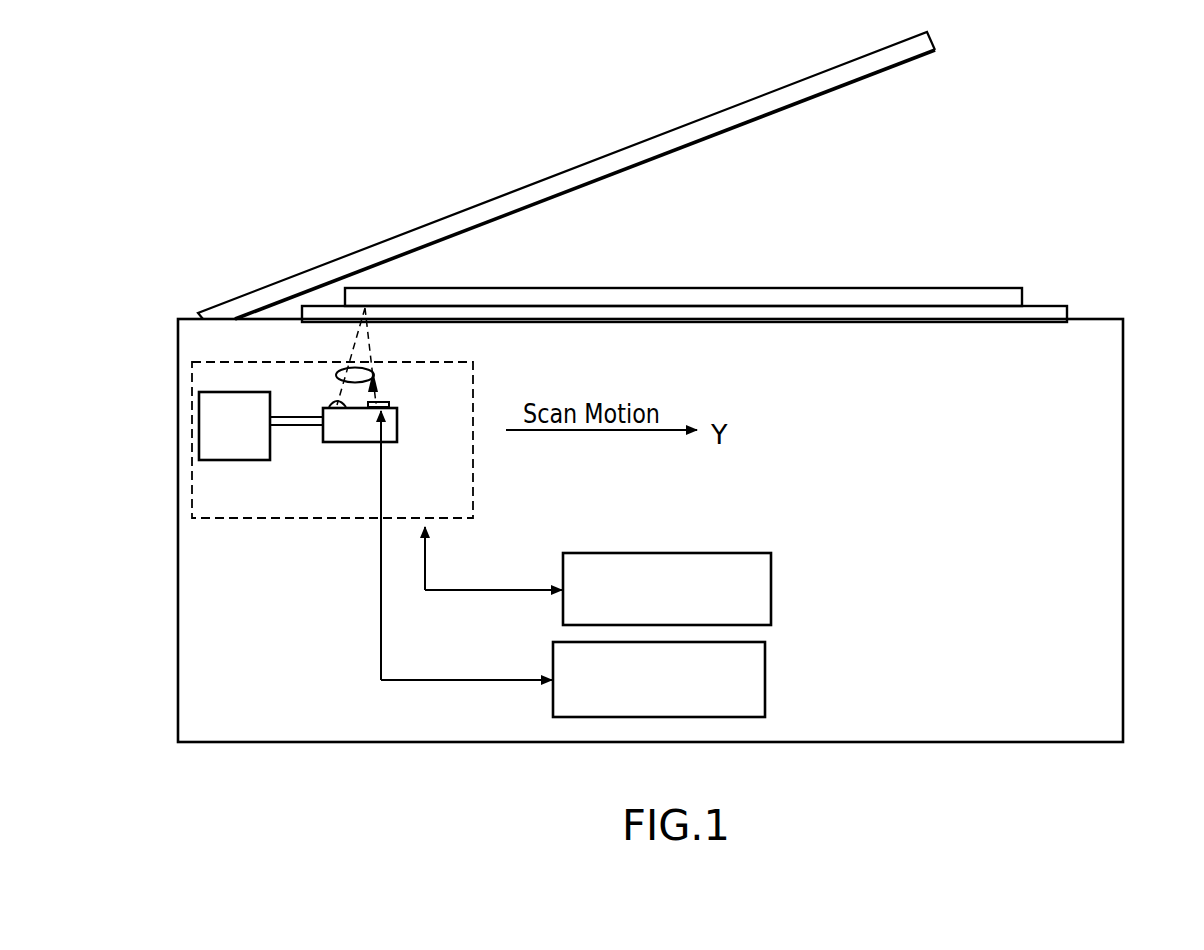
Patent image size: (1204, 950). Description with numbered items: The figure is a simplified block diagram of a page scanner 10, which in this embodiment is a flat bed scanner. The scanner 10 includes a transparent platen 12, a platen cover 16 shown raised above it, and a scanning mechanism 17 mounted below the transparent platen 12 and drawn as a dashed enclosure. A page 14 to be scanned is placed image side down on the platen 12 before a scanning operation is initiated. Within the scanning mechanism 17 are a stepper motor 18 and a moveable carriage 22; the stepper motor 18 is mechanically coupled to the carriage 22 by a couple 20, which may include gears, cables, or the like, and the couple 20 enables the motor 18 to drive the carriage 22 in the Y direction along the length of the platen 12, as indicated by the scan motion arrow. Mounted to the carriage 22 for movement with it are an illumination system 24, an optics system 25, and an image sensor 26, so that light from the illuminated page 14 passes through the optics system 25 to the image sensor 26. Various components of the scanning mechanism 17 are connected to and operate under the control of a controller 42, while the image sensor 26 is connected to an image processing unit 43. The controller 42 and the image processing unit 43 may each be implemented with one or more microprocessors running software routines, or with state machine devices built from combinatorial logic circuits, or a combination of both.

The page scanner 10 is at (1123, 380).
The transparent platen 12 is at (1038, 306).
The page 14 is at (712, 288).
The platen cover 16 is at (667, 153).
The scanning mechanism 17 is at (313, 519).
The stepper motor 18 is at (250, 439).
The couple 20 is at (292, 426).
The moveable carriage 22 is at (397, 425).
The illumination system 24 is at (335, 404).
The optics system 25 is at (375, 375).
The image sensor 26 is at (390, 404).
The controller 42 is at (771, 588).
The image processing unit 43 is at (765, 678).